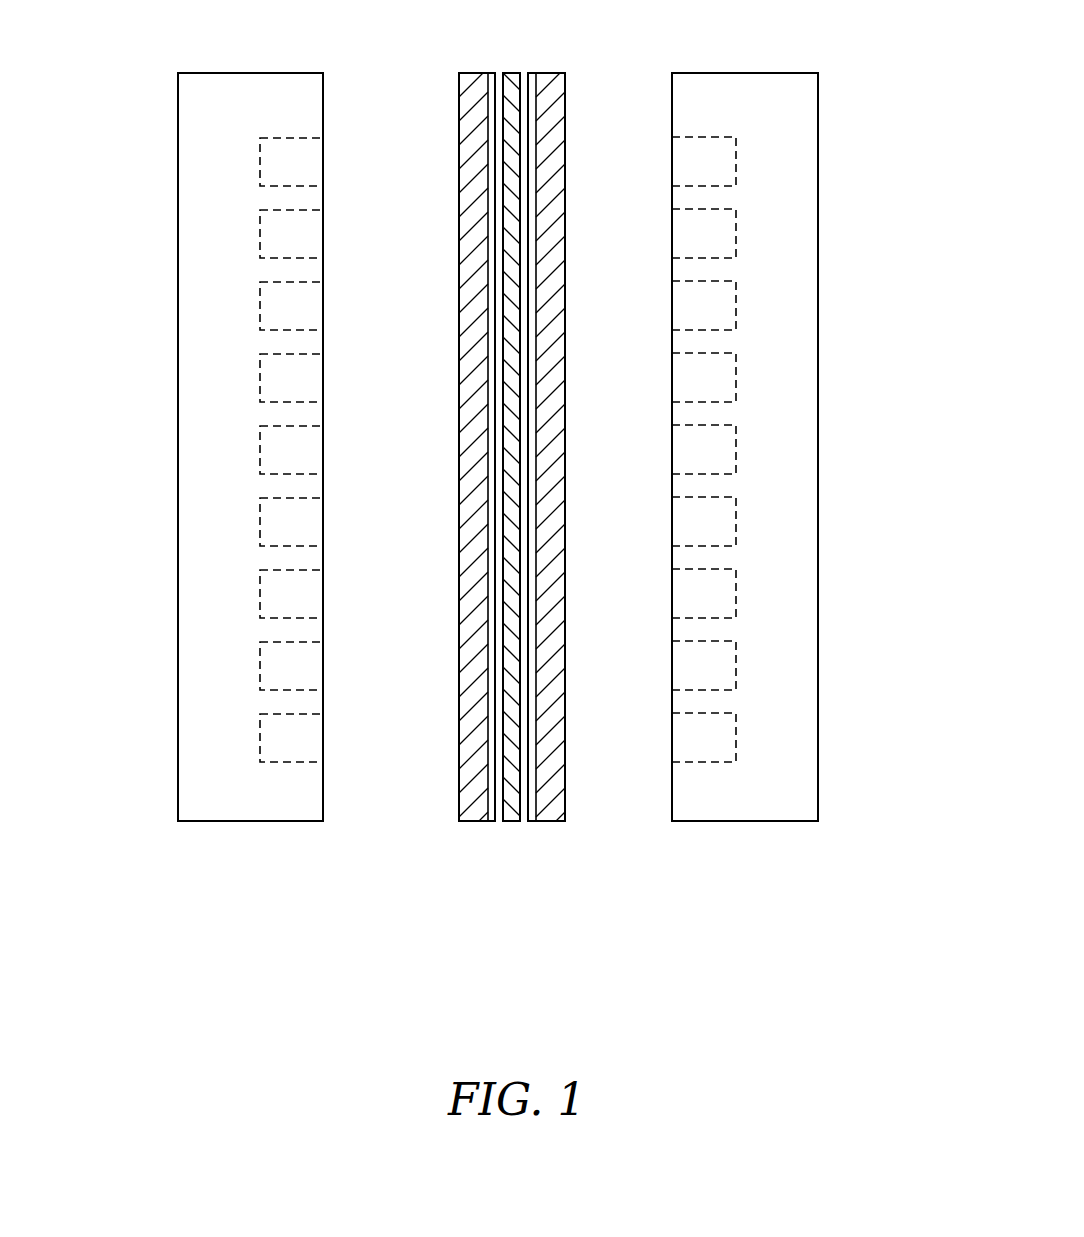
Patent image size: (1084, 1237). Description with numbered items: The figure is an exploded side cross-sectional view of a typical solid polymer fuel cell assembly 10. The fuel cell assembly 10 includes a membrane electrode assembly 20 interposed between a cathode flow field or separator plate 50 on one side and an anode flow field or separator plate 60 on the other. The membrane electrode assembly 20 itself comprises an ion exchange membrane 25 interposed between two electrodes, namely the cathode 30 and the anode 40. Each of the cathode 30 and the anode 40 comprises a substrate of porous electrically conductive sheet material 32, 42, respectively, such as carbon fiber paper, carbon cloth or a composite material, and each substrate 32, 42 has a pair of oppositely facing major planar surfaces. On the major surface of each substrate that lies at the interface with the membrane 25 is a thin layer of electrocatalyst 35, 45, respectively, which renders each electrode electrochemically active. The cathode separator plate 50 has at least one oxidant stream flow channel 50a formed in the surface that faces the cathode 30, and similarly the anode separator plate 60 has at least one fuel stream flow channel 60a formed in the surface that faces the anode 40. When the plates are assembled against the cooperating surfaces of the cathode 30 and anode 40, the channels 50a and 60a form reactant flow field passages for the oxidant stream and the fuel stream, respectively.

The solid polymer fuel cell assembly 10 is at (504, 469).
The membrane electrode assembly 20 is at (508, 445).
The ion exchange membrane 25 is at (510, 73).
The cathode 30 is at (586, 427).
The porous electrically conductive sheet material 32 is at (553, 650).
The electrocatalyst 35 is at (587, 447).
The anode 40 is at (433, 429).
The porous electrically conductive sheet material 42 is at (466, 688).
The electrocatalyst 45 is at (495, 764).
The cathode separator plate 50 is at (803, 447).
The oxidant stream flow channel 50a is at (728, 444).
The anode separator plate 60 is at (198, 447).
The fuel stream flow channel 60a is at (268, 447).